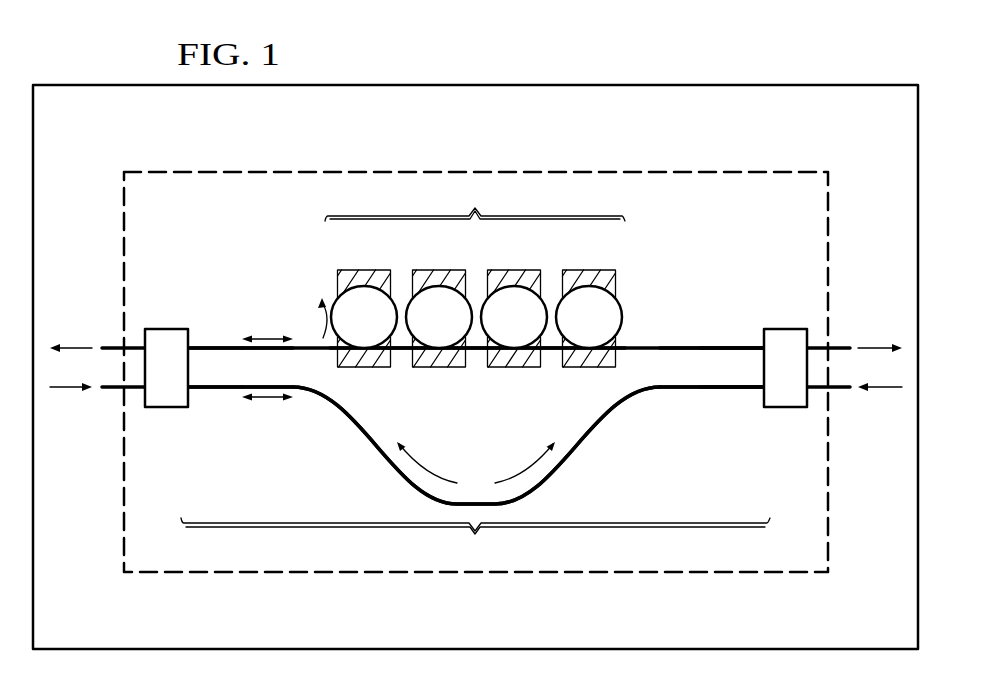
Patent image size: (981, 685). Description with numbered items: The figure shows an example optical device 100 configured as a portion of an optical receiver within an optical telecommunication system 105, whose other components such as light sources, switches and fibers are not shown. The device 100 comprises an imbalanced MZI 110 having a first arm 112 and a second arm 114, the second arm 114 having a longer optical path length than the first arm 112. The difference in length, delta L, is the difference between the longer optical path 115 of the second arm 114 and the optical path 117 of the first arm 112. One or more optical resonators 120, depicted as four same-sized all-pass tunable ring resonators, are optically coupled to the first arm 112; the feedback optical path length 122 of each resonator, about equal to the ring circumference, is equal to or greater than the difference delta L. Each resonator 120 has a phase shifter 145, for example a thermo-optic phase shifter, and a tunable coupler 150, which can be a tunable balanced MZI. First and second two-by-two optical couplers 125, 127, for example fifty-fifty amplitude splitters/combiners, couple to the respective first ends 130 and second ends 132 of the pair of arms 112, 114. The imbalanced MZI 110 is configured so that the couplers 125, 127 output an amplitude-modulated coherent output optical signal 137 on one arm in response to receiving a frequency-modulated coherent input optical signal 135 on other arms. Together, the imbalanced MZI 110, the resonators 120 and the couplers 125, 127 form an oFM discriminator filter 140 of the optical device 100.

The optical device 100 is at (701, 151).
The optical telecommunication system 105 is at (809, 82).
The imbalanced MZI 110 is at (475, 475).
The first arm 112 is at (673, 346).
The second arm 114 is at (683, 390).
The longer optical path 115 is at (268, 398).
The optical path 117 is at (268, 338).
The optical resonators 120 is at (456, 301).
The feedback optical path length 122 is at (317, 325).
The first 2×2 optical coupler 125 is at (167, 407).
The second 2×2 optical coupler 127 is at (786, 407).
The first ends 130 is at (215, 347).
The second ends 132 is at (737, 346).
The frequency-modulated coherent input optical signal 135 is at (63, 389).
The amplitude-modulated coherent output optical signal 137 is at (75, 347).
The oFM discriminator filter 140 is at (114, 243).
The phase shifter 145 is at (365, 270).
The tunable coupler 150 is at (588, 363).